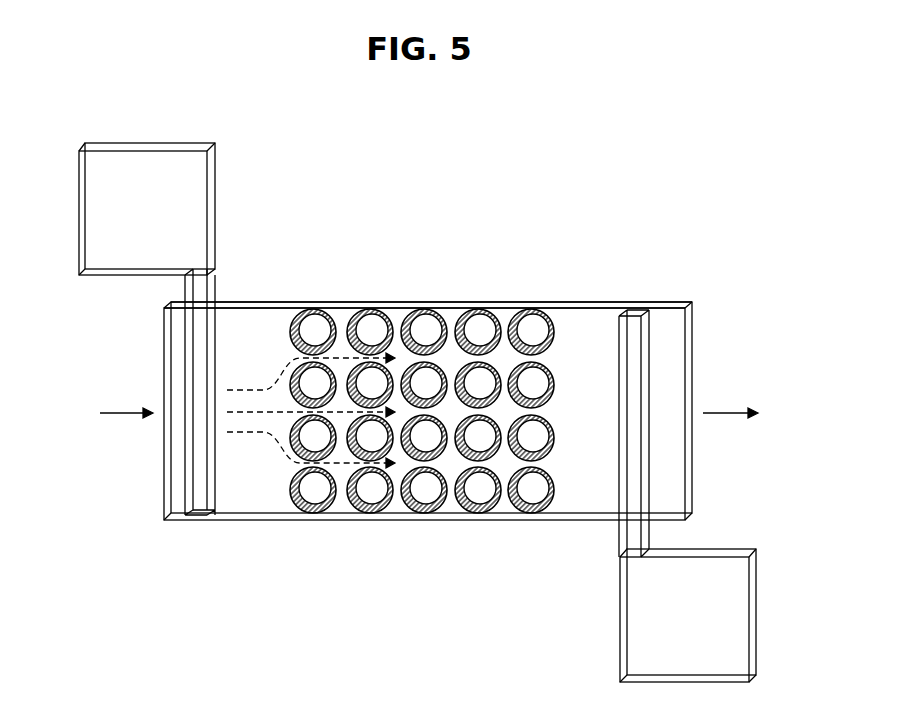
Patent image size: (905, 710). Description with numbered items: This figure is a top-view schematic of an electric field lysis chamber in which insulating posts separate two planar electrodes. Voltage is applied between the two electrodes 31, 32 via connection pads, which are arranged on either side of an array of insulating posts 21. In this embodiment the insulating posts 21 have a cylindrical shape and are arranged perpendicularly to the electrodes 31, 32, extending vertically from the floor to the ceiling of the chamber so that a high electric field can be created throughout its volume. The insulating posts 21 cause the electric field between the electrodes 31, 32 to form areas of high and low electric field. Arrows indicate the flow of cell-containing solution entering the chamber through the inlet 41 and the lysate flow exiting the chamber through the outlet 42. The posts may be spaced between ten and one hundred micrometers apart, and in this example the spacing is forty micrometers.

The insulating posts 21 is at (417, 325).
The electrode 31 is at (667, 315).
The electrode 32 is at (583, 300).
The inlet 41 is at (167, 449).
The outlet 42 is at (690, 433).